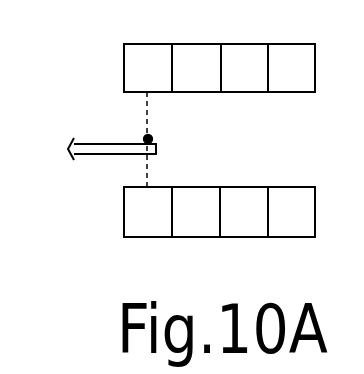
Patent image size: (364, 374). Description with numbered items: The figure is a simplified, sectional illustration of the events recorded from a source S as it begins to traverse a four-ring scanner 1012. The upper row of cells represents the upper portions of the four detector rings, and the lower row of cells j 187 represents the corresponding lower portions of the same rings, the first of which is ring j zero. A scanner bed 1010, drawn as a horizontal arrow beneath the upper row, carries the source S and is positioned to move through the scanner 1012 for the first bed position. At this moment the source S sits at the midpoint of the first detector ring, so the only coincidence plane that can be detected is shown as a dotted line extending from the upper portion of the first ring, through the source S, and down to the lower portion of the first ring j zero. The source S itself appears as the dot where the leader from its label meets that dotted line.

The four-ring scanner 1012 is at (124, 60).
The scanner bed 1010 is at (92, 155).
The source s is at (145, 137).
The lower detector ring elements j is at (219, 212).